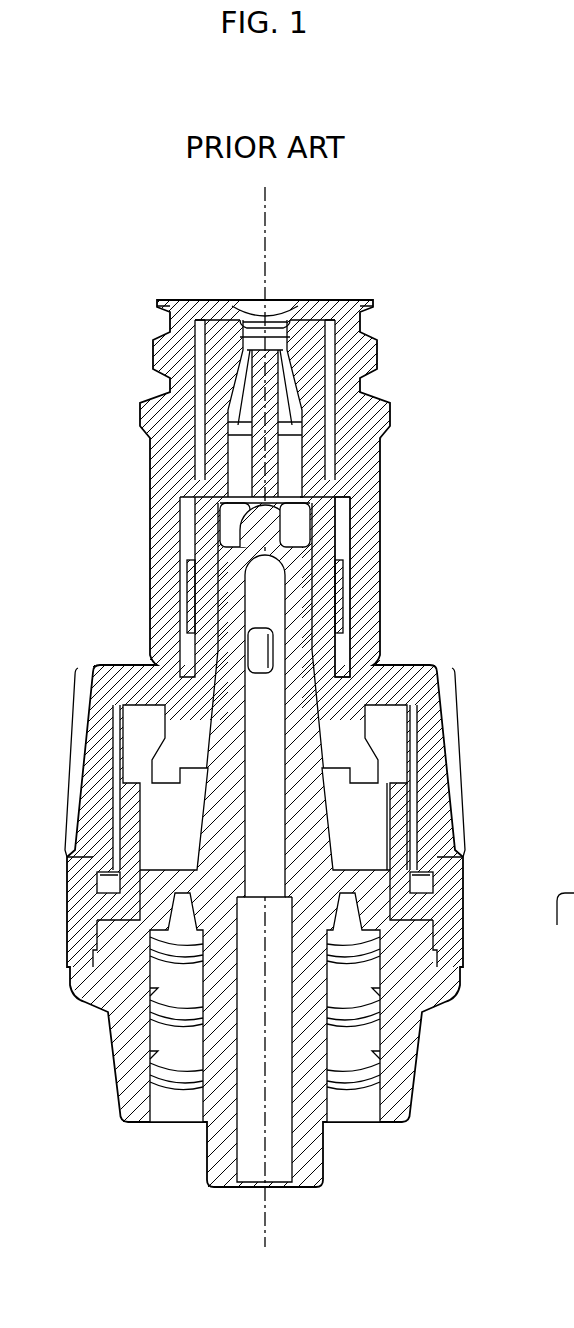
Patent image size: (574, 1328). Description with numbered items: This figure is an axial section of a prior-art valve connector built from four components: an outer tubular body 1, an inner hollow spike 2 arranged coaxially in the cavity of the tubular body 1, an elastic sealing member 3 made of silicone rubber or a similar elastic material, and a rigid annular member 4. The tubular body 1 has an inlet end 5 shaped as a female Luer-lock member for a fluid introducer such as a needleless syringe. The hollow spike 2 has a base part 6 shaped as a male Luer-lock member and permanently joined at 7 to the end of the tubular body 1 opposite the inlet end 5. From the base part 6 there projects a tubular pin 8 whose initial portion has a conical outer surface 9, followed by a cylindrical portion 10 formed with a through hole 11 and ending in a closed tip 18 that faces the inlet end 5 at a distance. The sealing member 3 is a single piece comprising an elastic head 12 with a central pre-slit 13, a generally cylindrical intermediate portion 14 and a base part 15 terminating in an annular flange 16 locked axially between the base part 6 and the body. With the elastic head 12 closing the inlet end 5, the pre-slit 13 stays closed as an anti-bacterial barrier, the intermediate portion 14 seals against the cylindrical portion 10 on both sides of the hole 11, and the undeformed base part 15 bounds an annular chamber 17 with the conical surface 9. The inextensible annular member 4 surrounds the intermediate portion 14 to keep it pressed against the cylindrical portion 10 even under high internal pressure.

The outer tubular body 1 is at (385, 534).
The inner hollow spike 2 is at (334, 802).
The elastic sealing member 3 is at (345, 648).
The annular member 4 is at (335, 600).
The inlet end 5 is at (352, 300).
The base part 6 is at (152, 1068).
The joint 7 is at (73, 966).
The tubular pin 8 is at (237, 683).
The conical outer surface 9 is at (195, 806).
The cylindrical portion 10 is at (240, 566).
The through hole 11 is at (253, 648).
The elastic head 12 is at (215, 300).
The central pre-slit 13 is at (268, 318).
The cylindrical intermediate portion 14 is at (207, 520).
The base part 15 is at (395, 823).
The annular flange 16 is at (88, 922).
The annular chamber 17 is at (365, 851).
The closed tip 18 is at (290, 503).